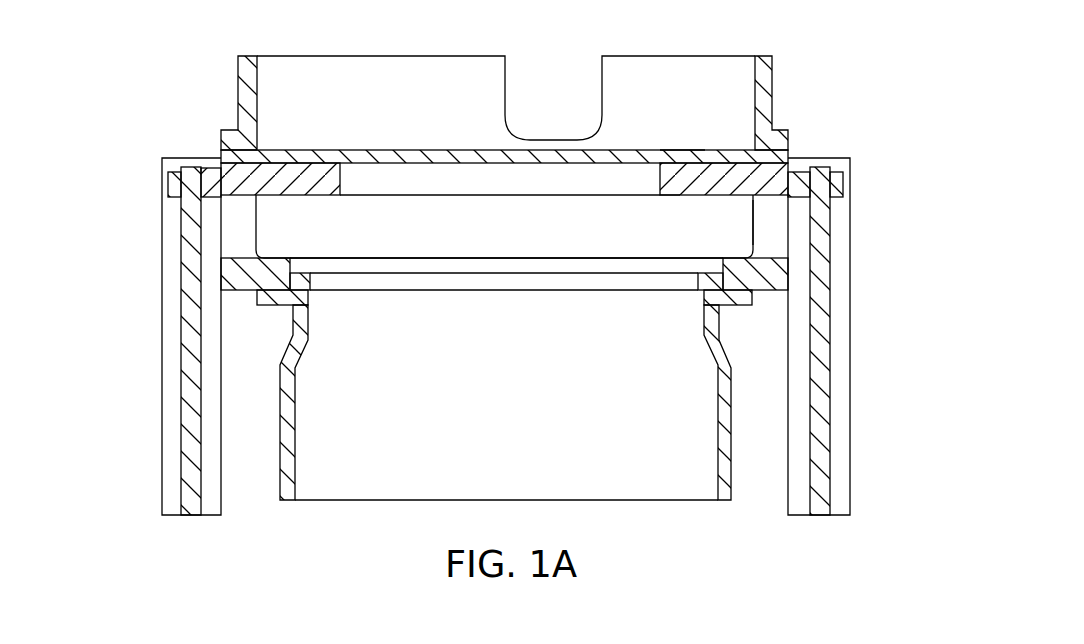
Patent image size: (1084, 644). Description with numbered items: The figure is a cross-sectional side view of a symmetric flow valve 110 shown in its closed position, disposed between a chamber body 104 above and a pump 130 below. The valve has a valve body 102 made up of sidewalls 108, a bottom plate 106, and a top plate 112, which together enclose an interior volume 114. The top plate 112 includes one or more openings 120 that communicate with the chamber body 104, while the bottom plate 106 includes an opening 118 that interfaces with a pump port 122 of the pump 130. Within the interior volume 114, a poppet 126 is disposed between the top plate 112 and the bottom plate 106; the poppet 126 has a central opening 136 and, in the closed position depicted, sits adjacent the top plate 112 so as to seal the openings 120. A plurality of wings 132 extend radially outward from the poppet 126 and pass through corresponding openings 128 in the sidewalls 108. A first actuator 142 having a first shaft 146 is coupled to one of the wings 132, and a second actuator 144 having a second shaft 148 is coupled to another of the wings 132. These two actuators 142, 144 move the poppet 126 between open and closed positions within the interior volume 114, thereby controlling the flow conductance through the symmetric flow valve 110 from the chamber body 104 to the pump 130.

The valve body 102 is at (275, 243).
The chamber body 104 is at (237, 74).
The bottom plate 106 is at (246, 292).
The sidewalls 108 is at (256, 217).
The symmetric flow valve 110 is at (166, 130).
The top plate 112 is at (445, 165).
The interior volume 114 is at (545, 246).
The opening 118 is at (320, 290).
The openings 120 is at (680, 150).
The pump port 122 is at (705, 292).
The poppet 126 is at (668, 197).
The openings 128 is at (753, 220).
The pump 130 is at (280, 418).
The wings 132 is at (205, 170).
The central opening 136 is at (660, 175).
The first actuator 142 is at (152, 352).
The second actuator 144 is at (858, 352).
The first shaft 146 is at (182, 272).
The second shaft 148 is at (830, 266).